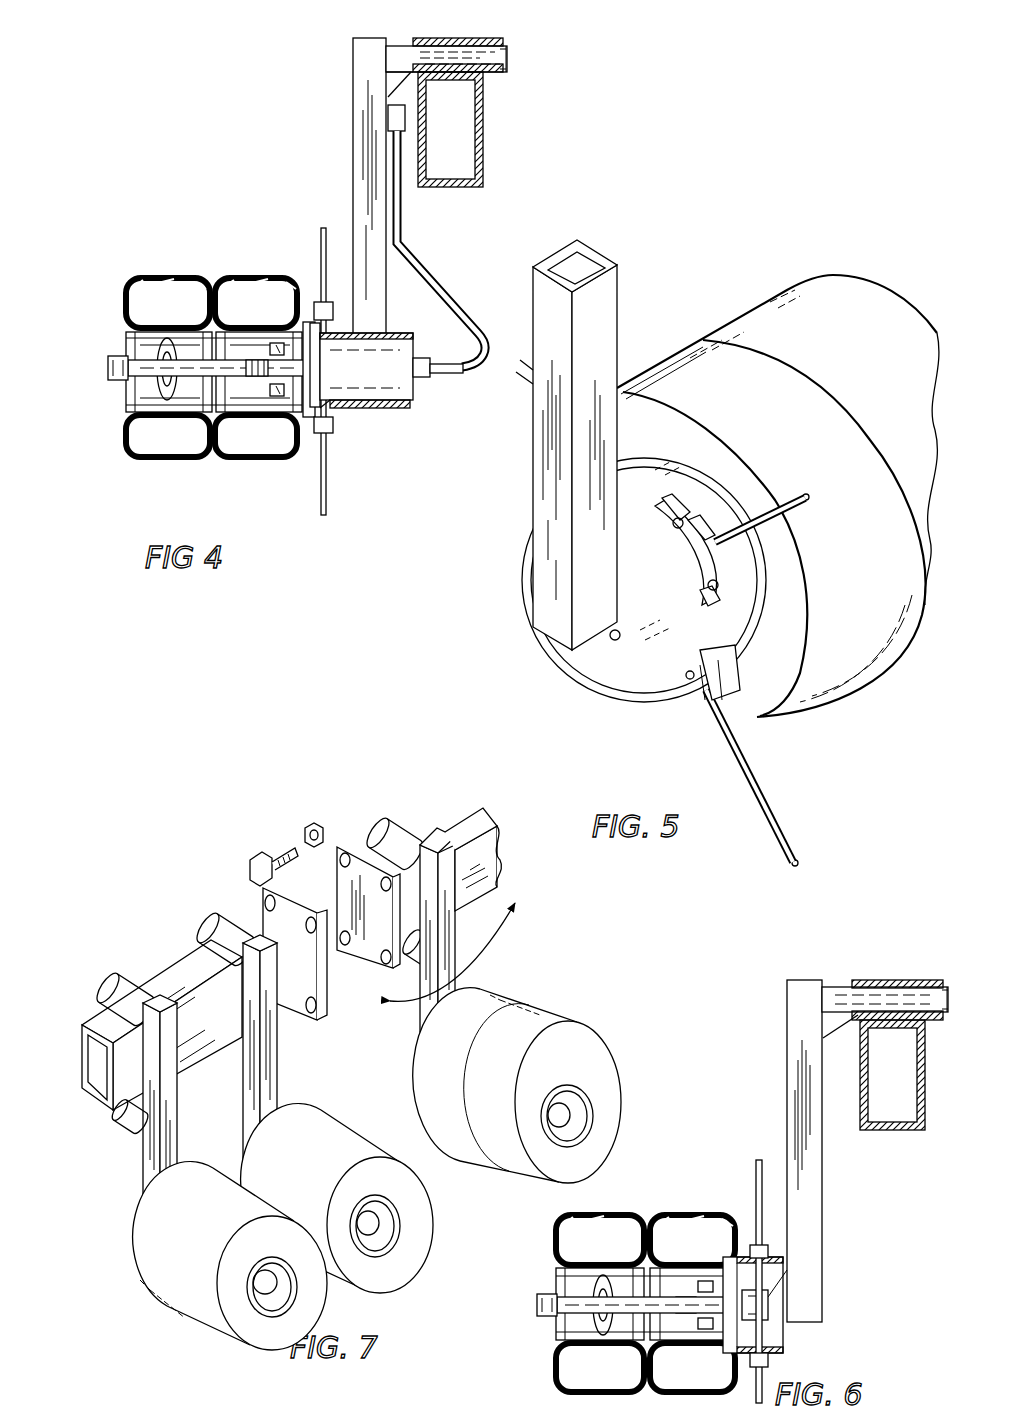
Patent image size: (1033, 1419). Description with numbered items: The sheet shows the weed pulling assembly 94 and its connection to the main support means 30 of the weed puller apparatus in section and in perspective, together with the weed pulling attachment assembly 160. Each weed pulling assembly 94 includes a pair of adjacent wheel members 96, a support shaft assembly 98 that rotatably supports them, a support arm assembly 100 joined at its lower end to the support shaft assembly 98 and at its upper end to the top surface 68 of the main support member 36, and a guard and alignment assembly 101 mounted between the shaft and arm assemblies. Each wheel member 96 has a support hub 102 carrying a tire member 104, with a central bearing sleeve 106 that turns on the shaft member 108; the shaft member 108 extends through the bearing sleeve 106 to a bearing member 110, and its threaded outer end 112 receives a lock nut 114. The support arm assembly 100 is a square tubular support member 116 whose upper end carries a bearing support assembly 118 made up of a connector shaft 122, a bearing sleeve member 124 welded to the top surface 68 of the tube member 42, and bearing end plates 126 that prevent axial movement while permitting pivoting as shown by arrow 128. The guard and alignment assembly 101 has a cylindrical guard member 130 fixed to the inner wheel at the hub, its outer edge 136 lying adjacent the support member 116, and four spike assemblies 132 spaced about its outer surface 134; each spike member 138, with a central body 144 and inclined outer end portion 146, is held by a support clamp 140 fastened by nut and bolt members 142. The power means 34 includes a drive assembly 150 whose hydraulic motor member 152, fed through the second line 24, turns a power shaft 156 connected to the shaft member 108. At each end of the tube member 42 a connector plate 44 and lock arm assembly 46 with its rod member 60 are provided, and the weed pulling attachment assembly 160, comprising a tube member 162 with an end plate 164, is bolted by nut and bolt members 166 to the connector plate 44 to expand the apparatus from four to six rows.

In FIG. 4, the second line 24 is at (441, 292).
In FIG. 7, the main support means 30 is at (505, 862).
In FIG. 4, the power means 34 is at (394, 406).
In FIG. 4, the main support member 36 is at (483, 165).
In FIG. 6, the main support member 36 is at (923, 1093).
In FIG. 7, the tube member 42 is at (505, 833).
In FIG. 7, the connector plate 44 is at (357, 877).
In FIG. 7, the lock arm assembly 46 is at (100, 1112).
In FIG. 7, the rod member 60 is at (130, 1128).
In FIG. 4, the top surface 68 is at (492, 64).
In FIG. 7, the top surface 68 is at (457, 817).
In FIG. 6, the top surface 68 is at (883, 1013).
In FIG. 4, the weed pulling assembly 94 is at (171, 364).
In FIG. 7, the weed pulling assembly 94 is at (352, 1169).
In FIG. 4, the wheel member 96 is at (161, 277).
In FIG. 5, the wheel member 96 is at (777, 303).
In FIG. 7, the wheel member 96 is at (330, 1128).
In FIG. 6, the wheel member 96 is at (690, 1215).
In FIG. 4, the support shaft assembly 98 is at (262, 330).
In FIG. 5, the support shaft assembly 98 is at (570, 660).
In FIG. 6, the support shaft assembly 98 is at (767, 1308).
In FIG. 4, the support arm assembly 100 is at (352, 163).
In FIG. 6, the support arm assembly 100 is at (785, 1098).
In FIG. 4, the guard and alignment assembly 101 is at (340, 420).
In FIG. 5, the guard and alignment assembly 101 is at (577, 673).
In FIG. 6, the guard and alignment assembly 101 is at (783, 1252).
In FIG. 4, the support hub 102 is at (123, 350).
In FIG. 6, the support hub 102 is at (572, 1278).
In FIG. 4, the tire member 104 is at (130, 277).
In FIG. 6, the tire member 104 is at (553, 1235).
In FIG. 4, the bearing sleeve 106 is at (120, 356).
In FIG. 6, the bearing sleeve 106 is at (570, 1320).
In FIG. 4, the shaft member 108 is at (228, 278).
In FIG. 6, the bearing member 110 is at (741, 1312).
In FIG. 4, the outer end 112 is at (118, 378).
In FIG. 4, the lock nut 114 is at (132, 380).
In FIG. 4, the support member 116 is at (365, 72).
In FIG. 5, the support member 116 is at (603, 340).
In FIG. 7, the support member 116 is at (262, 1102).
In FIG. 4, the bearing support assembly 118 is at (503, 62).
In FIG. 6, the bearing support assembly 118 is at (872, 982).
In FIG. 4, the connector shaft 122 is at (400, 46).
In FIG. 6, the connector shaft 122 is at (833, 998).
In FIG. 4, the bearing sleeve member 124 is at (478, 33).
In FIG. 7, the bearing sleeve member 124 is at (405, 833).
In FIG. 4, the bearing end plate 126 is at (412, 22).
In FIG. 6, the bearing end plate 126 is at (947, 1003).
In FIG. 7, the arrow 128 is at (500, 932).
In FIG. 5, the guard member 130 is at (630, 507).
In FIG. 5, the spike assembly 132 is at (755, 518).
In FIG. 5, the outer surface 134 is at (645, 675).
In FIG. 5, the outer edge 136 is at (597, 565).
In FIG. 5, the spike member 138 is at (786, 517).
In FIG. 5, the support clamp 140 is at (735, 688).
In FIG. 5, the nut and bolt members 142 is at (735, 663).
In FIG. 5, the central body 144 is at (737, 753).
In FIG. 5, the outer end portion 146 is at (808, 497).
In FIG. 4, the drive assembly 150 is at (386, 340).
In FIG. 4, the hydraulic motor member 152 is at (370, 390).
In FIG. 4, the power shaft 156 is at (310, 420).
In FIG. 7, the weed pulling attachment assembly 160 is at (137, 1165).
In FIG. 7, the tube member 162 is at (105, 1020).
In FIG. 7, the end plate 164 is at (260, 885).
In FIG. 7, the nut and bolt members 166 is at (303, 824).